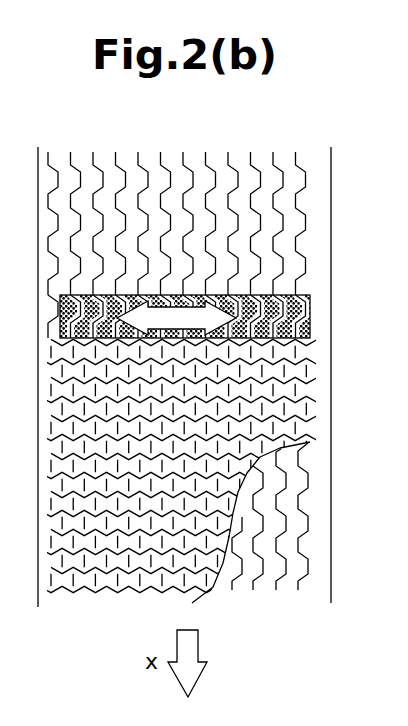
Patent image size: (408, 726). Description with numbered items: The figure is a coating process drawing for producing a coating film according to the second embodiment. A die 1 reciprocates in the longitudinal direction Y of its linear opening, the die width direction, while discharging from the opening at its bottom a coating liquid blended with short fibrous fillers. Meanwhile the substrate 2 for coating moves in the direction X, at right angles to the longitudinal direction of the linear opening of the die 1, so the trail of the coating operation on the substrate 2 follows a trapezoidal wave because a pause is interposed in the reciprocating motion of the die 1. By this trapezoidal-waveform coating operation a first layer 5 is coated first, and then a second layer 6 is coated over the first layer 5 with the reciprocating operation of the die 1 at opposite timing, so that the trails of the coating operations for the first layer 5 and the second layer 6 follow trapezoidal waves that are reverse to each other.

The die 1 is at (311, 313).
The substrate 2 is at (315, 226).
The first layer 5 is at (290, 502).
The second layer 6 is at (298, 408).